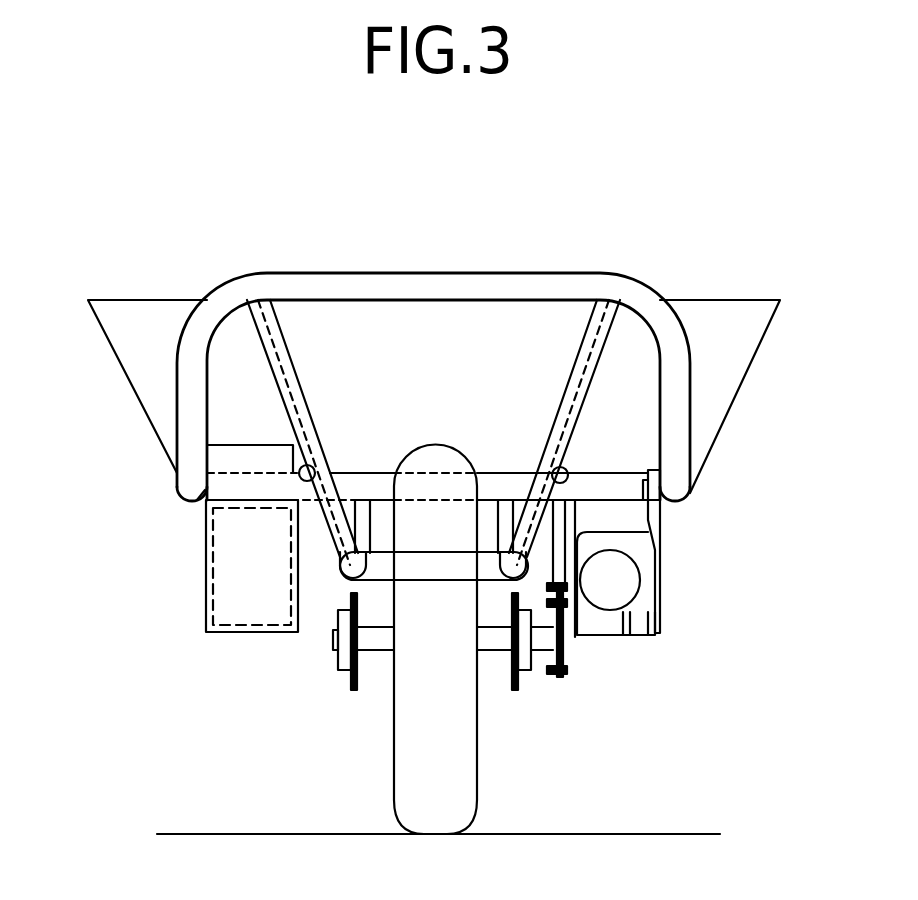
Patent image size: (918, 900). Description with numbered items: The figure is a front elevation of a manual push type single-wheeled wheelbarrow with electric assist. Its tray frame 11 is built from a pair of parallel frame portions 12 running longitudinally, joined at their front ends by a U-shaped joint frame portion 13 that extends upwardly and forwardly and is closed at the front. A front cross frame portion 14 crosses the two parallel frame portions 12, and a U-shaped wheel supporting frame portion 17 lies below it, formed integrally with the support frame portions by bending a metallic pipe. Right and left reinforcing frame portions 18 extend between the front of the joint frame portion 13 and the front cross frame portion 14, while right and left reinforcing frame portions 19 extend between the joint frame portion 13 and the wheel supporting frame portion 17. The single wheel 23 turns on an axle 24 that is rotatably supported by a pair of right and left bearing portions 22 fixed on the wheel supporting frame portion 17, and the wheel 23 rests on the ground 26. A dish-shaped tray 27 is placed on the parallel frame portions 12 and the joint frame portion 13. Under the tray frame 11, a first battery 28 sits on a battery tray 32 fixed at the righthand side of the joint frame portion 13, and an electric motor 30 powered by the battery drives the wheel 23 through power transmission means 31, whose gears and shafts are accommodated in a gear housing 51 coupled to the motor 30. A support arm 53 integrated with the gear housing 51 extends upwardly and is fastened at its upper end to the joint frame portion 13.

The tray frame 11 is at (713, 415).
The parallel frame portion 12 is at (203, 492).
The joint frame portion 13 is at (480, 276).
The front cross frame portion 14 is at (512, 482).
The wheel supporting frame portion 17 is at (433, 570).
The reinforcing frame portion 18 is at (277, 417).
The reinforcing frame portion 19 is at (313, 433).
The bearing portion 22 is at (337, 653).
The wheel 23 is at (460, 777).
The axle 24 is at (373, 643).
The ground 26 is at (660, 834).
The tray 27 is at (152, 327).
The first battery 28 is at (253, 623).
The electric motor 30 is at (623, 587).
The power transmission means 31 is at (588, 655).
The battery tray 32 is at (206, 585).
The gear housing 51 is at (613, 635).
The support arm 53 is at (655, 538).